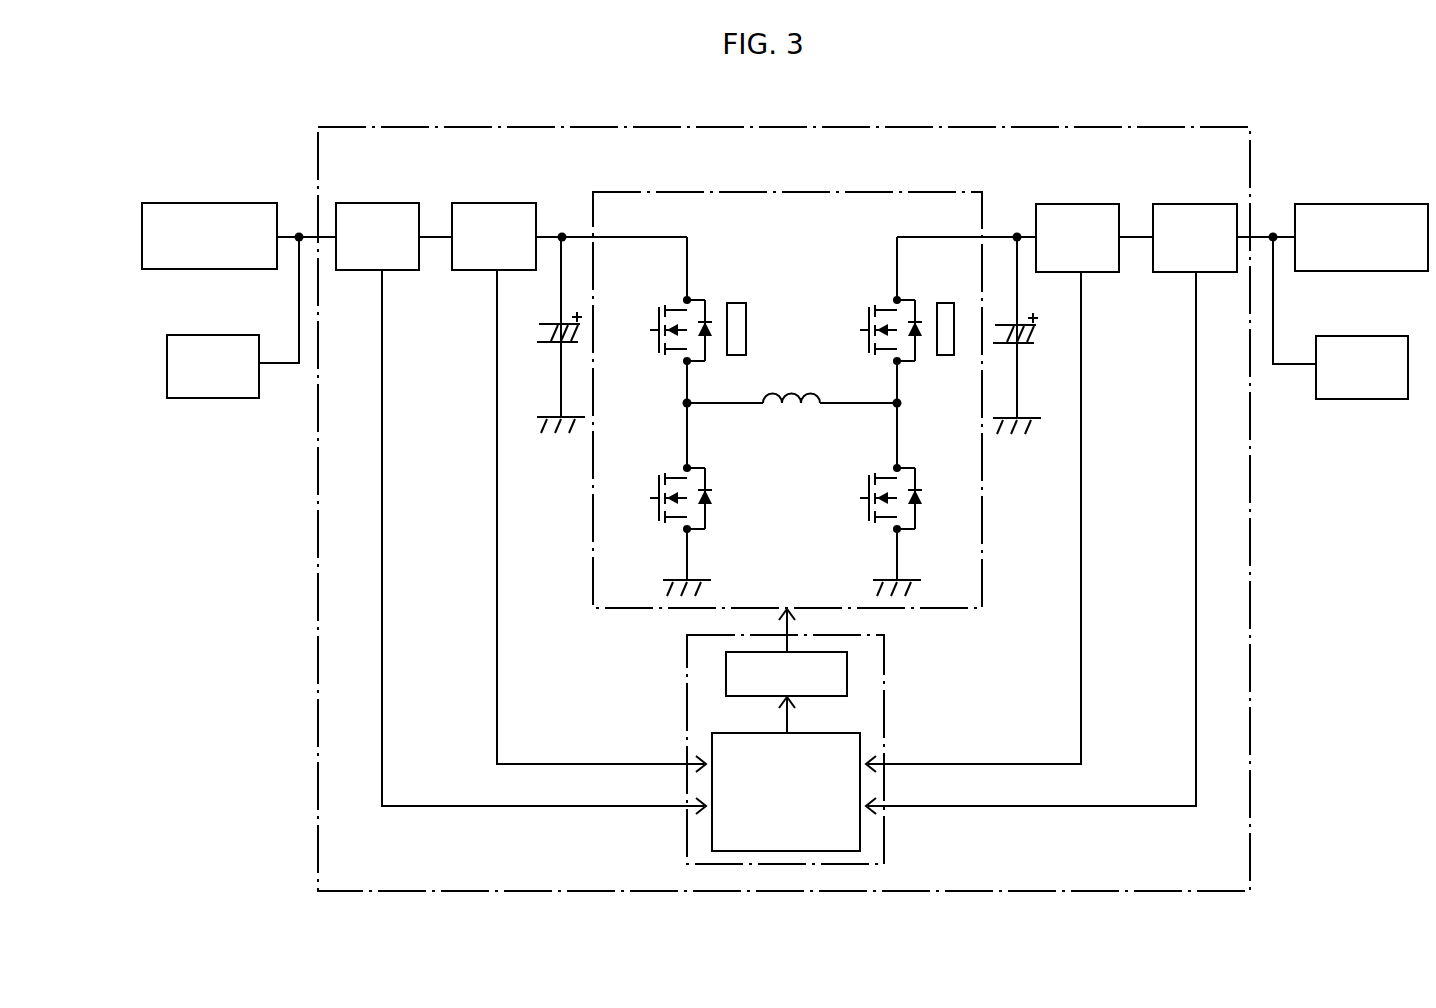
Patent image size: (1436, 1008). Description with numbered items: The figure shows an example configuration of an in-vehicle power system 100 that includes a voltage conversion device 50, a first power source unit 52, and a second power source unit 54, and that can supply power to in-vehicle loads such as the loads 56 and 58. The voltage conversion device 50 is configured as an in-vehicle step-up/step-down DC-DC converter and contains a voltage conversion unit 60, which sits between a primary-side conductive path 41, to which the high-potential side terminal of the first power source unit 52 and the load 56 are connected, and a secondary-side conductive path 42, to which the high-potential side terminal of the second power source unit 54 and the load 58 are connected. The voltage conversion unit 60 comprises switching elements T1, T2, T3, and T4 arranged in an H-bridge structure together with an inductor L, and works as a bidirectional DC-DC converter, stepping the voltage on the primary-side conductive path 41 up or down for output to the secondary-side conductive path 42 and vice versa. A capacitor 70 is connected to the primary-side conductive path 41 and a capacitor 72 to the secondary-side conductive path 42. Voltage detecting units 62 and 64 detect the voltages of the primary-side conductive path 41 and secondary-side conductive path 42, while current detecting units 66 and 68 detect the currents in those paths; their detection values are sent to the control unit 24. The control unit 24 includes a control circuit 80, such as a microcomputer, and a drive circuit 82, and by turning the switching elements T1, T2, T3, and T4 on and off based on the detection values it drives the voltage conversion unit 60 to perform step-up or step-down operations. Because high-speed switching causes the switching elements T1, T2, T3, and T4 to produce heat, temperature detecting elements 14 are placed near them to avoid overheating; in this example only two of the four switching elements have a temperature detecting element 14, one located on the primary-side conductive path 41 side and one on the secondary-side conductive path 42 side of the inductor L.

The in-vehicle power system 100 is at (1322, 104).
The voltage conversion device 50 is at (1140, 128).
The voltage conversion unit 60 is at (915, 192).
The control unit 24 is at (884, 703).
The control circuit 80 is at (860, 747).
The drive circuit 82 is at (847, 678).
The first power source unit 52 is at (208, 203).
The second power source unit 54 is at (1357, 204).
The load 56 is at (214, 335).
The load 58 is at (1355, 336).
The voltage detecting unit 62 is at (374, 203).
The voltage detecting unit 64 is at (1183, 204).
The current detecting unit 66 is at (490, 203).
The current detecting unit 68 is at (1065, 204).
The capacitor 70 is at (545, 345).
The capacitor 72 is at (1027, 346).
The primary-side conductive path 41 is at (440, 238).
The secondary-side conductive path 42 is at (1140, 238).
The temperature detecting element 14 is at (736, 303).
The switching element T1 is at (652, 330).
The switching element T2 is at (652, 498).
The switching element T3 is at (862, 330).
The switching element T4 is at (862, 498).
The inductor L is at (788, 385).